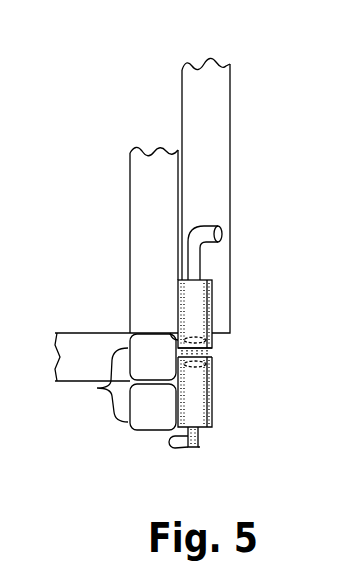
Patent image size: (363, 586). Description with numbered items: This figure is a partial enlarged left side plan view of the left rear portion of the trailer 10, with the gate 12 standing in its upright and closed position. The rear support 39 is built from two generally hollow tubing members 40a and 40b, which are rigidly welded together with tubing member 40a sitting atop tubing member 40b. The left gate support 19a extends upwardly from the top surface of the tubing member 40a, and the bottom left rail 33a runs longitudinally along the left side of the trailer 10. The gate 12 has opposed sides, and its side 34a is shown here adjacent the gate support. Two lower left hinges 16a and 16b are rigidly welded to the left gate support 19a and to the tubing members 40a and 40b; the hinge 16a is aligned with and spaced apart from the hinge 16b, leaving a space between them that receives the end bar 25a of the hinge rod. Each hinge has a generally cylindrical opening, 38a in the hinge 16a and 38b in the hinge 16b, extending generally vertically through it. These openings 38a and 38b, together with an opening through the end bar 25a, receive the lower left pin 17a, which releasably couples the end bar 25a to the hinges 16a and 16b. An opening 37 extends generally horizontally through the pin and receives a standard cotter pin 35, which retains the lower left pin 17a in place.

The trailer 10 is at (155, 62).
The gate 12 is at (226, 58).
The side of the gate 34a is at (213, 143).
The left gate support 19a is at (138, 192).
The lower left pin 17a is at (215, 224).
The cylindrical opening 38a is at (212, 282).
The lower left hinge 16a is at (209, 328).
The end bar 25a is at (212, 345).
The lower left hinge 16b is at (205, 378).
The cylindrical opening 38b is at (200, 428).
The opening 37 is at (200, 444).
The cotter pin 35 is at (178, 450).
The bottom left rail 33a is at (100, 366).
The rear support 39 is at (100, 385).
The tubing member 40a is at (153, 357).
The tubing member 40b is at (153, 407).